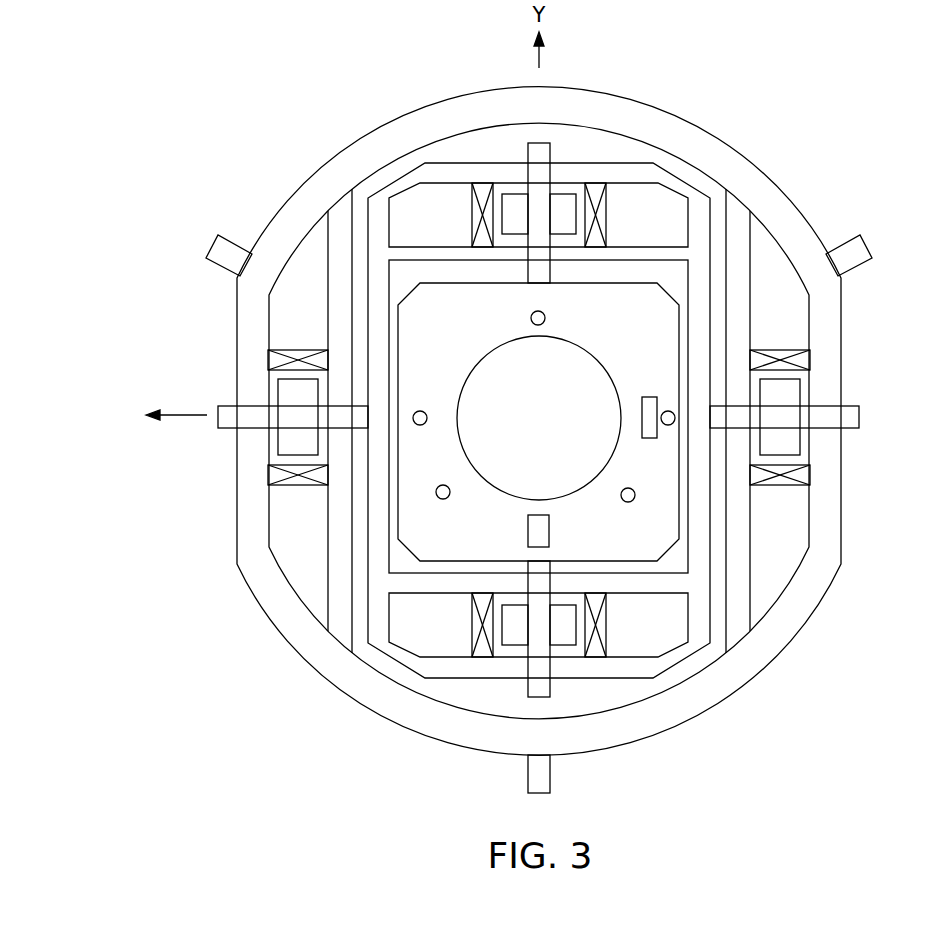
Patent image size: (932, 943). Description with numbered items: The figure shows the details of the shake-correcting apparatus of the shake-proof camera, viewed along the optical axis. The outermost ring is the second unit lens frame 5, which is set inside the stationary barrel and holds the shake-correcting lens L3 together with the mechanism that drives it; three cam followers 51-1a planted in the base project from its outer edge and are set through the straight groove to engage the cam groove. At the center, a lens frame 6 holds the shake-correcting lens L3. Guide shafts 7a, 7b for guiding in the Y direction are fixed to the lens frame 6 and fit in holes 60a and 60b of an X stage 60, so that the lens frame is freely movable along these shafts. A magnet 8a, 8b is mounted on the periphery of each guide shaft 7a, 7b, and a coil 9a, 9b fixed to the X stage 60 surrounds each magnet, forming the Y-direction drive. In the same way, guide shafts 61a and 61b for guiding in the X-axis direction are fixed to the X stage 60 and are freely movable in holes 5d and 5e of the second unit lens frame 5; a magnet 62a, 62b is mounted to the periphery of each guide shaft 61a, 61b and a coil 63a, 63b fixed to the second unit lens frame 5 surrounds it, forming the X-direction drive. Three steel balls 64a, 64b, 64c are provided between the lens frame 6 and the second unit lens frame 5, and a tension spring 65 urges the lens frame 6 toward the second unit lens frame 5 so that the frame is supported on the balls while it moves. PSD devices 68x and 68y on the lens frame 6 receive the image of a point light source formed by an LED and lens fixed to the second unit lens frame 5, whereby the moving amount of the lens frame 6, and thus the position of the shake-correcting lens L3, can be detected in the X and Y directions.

The second unit lens frame 5 is at (755, 193).
The cam follower 51-1a is at (845, 260).
The X stage 60 is at (627, 172).
The hole 60a is at (547, 588).
The hole 60b is at (552, 172).
The guide shaft 7a is at (545, 687).
The guide shaft 7b is at (538, 153).
The magnet 8a is at (512, 622).
The magnet 8b is at (513, 205).
The coil 9a is at (480, 602).
The coil 9b is at (477, 235).
The lens frame 6 is at (410, 542).
The shake-correcting lens L3 is at (588, 364).
The steel ball 64a is at (546, 313).
The steel ball 64b is at (443, 485).
The steel ball 64c is at (622, 490).
The tension spring 65 is at (420, 411).
The PSD device 68x is at (645, 412).
The PSD device 68y is at (540, 533).
The guide shaft 61a is at (855, 415).
The guide shaft 61b is at (218, 420).
The magnet 62a is at (783, 392).
The magnet 62b is at (307, 385).
The coil 63a is at (778, 352).
The coil 63b is at (272, 360).
The hole 5d is at (735, 430).
The hole 5e is at (310, 435).